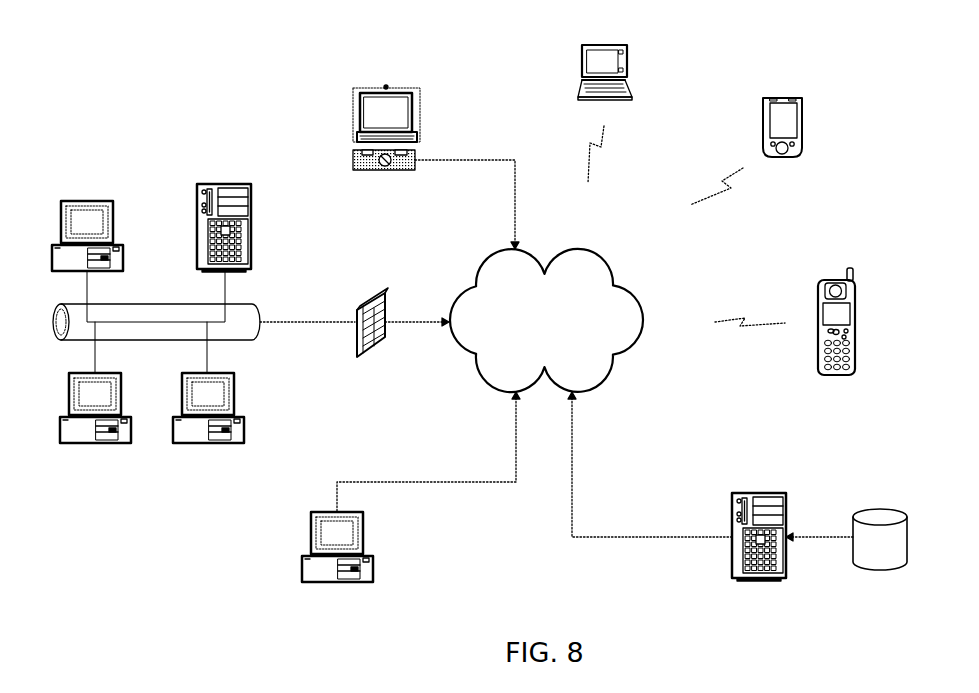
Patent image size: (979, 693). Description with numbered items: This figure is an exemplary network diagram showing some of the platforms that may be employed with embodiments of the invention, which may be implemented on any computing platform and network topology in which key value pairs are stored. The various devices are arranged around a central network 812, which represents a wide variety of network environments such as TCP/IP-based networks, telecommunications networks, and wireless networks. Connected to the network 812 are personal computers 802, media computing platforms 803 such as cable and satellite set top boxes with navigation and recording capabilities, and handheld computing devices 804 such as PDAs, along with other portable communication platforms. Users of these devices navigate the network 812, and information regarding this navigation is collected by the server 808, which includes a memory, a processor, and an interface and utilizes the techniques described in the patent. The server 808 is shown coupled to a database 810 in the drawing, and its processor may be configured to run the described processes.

The personal computers 802 is at (324, 304).
The media computing platforms 803 is at (366, 127).
The handheld computing devices 804 is at (762, 118).
The server 808 is at (787, 424).
The database 810 is at (873, 518).
The network 812 is at (534, 316).